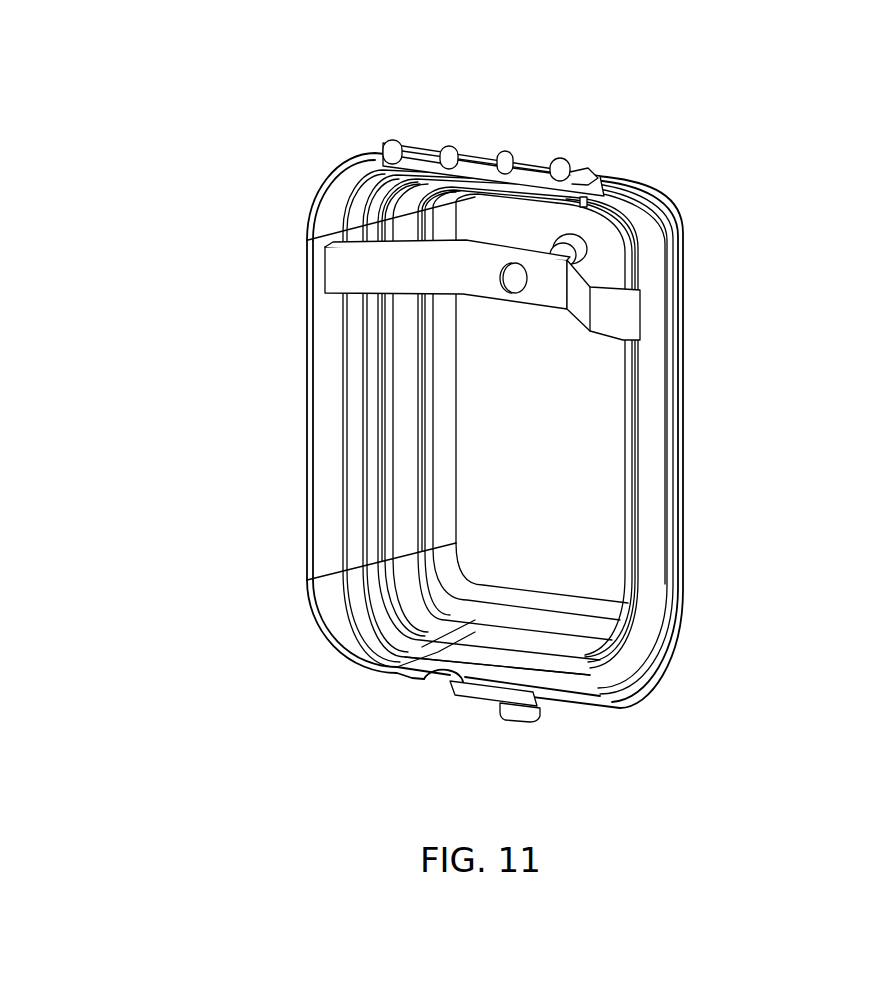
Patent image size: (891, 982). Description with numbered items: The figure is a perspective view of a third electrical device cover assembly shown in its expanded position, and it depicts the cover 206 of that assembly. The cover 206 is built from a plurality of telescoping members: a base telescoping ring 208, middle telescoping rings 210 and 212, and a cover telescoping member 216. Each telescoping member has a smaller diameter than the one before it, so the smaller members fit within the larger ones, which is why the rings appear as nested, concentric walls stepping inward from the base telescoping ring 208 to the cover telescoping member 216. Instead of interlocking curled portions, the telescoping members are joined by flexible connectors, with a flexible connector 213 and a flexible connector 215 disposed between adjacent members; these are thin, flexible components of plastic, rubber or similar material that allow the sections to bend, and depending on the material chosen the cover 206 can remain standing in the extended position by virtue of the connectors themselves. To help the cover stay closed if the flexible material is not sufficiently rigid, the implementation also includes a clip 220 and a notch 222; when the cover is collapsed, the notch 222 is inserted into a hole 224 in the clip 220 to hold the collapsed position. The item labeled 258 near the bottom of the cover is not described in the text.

The cover 206 is at (467, 430).
The base telescoping ring 208 is at (650, 607).
The middle telescoping ring 210 is at (682, 578).
The middle telescoping ring 212 is at (680, 523).
The flexible connector 213 is at (515, 640).
The flexible connector 215 is at (565, 603).
The cover telescoping member 216 is at (688, 457).
The clip 220 is at (345, 268).
The notch 222 is at (577, 232).
The hole 224 is at (512, 282).
The latch tab 258 is at (432, 692).